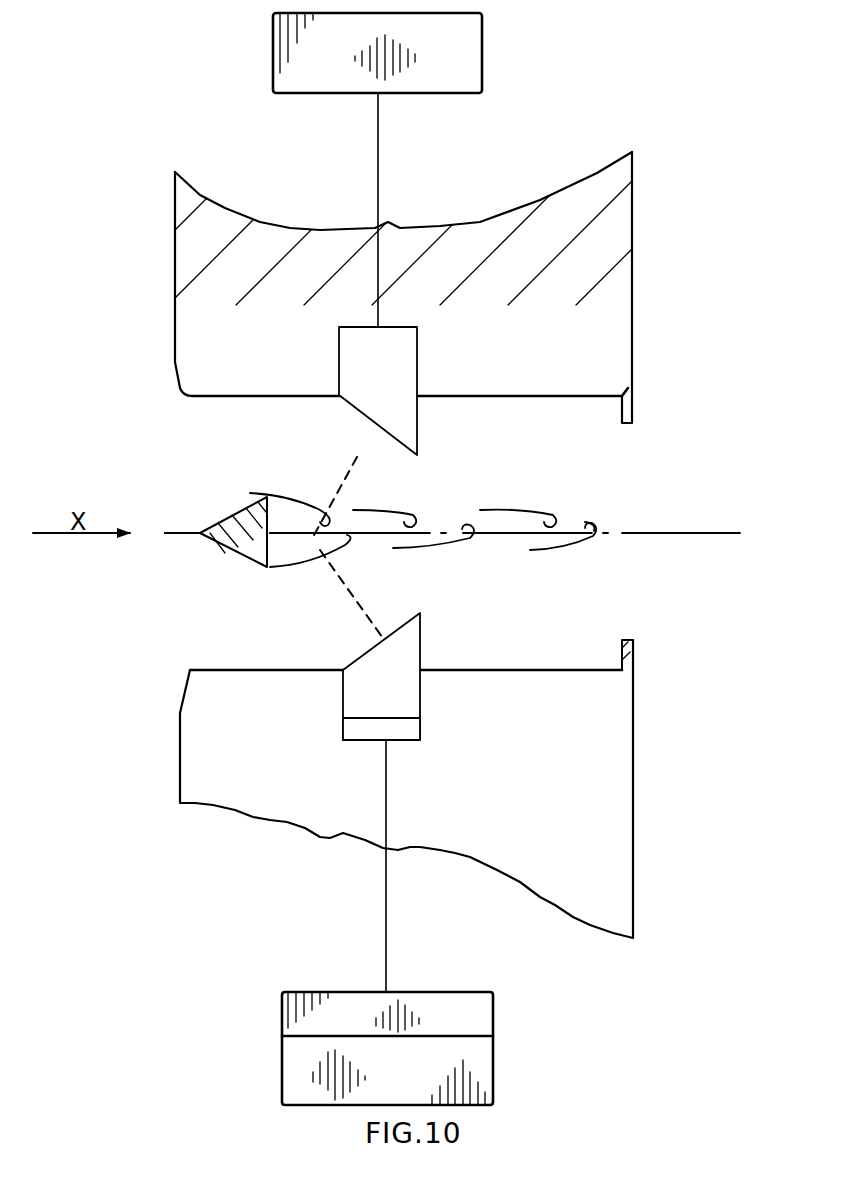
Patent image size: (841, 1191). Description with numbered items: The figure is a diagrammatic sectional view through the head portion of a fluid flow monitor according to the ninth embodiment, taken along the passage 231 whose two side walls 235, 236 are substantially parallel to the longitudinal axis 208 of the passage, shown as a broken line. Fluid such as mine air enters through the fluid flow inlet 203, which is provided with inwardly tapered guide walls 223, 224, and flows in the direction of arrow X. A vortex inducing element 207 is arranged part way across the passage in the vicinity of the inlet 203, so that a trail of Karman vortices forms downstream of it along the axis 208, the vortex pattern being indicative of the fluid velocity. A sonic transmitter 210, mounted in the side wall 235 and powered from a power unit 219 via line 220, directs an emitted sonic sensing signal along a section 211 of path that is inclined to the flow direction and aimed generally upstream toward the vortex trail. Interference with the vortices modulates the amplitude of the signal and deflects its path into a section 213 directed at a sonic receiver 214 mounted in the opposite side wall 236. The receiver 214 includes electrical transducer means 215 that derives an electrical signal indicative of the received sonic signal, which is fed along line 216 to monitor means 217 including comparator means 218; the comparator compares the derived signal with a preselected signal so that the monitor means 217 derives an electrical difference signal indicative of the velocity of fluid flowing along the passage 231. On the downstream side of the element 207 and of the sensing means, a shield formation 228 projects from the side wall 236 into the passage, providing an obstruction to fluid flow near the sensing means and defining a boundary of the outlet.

The fluid flow inlet 203 is at (172, 478).
The vortex inducing element 207 is at (245, 554).
The longitudinal axis of the passage 208 is at (693, 530).
The sonic transmitter 210 is at (398, 370).
The section of sensing signal path 211 is at (345, 468).
The deflected section of path 213 is at (350, 602).
The sonic receiver 214 is at (405, 700).
The electrical transducer means 215 is at (408, 730).
The line 216 is at (387, 915).
The monitor means 217 is at (468, 1013).
The comparator means 218 is at (475, 1082).
The power unit 219 is at (460, 58).
The line 220 is at (379, 163).
The guide wall 223 is at (190, 376).
The guide wall 224 is at (186, 703).
The shield formation 228 is at (633, 644).
The passage 231 is at (245, 609).
The side wall 235 is at (553, 398).
The side wall 236 is at (523, 668).